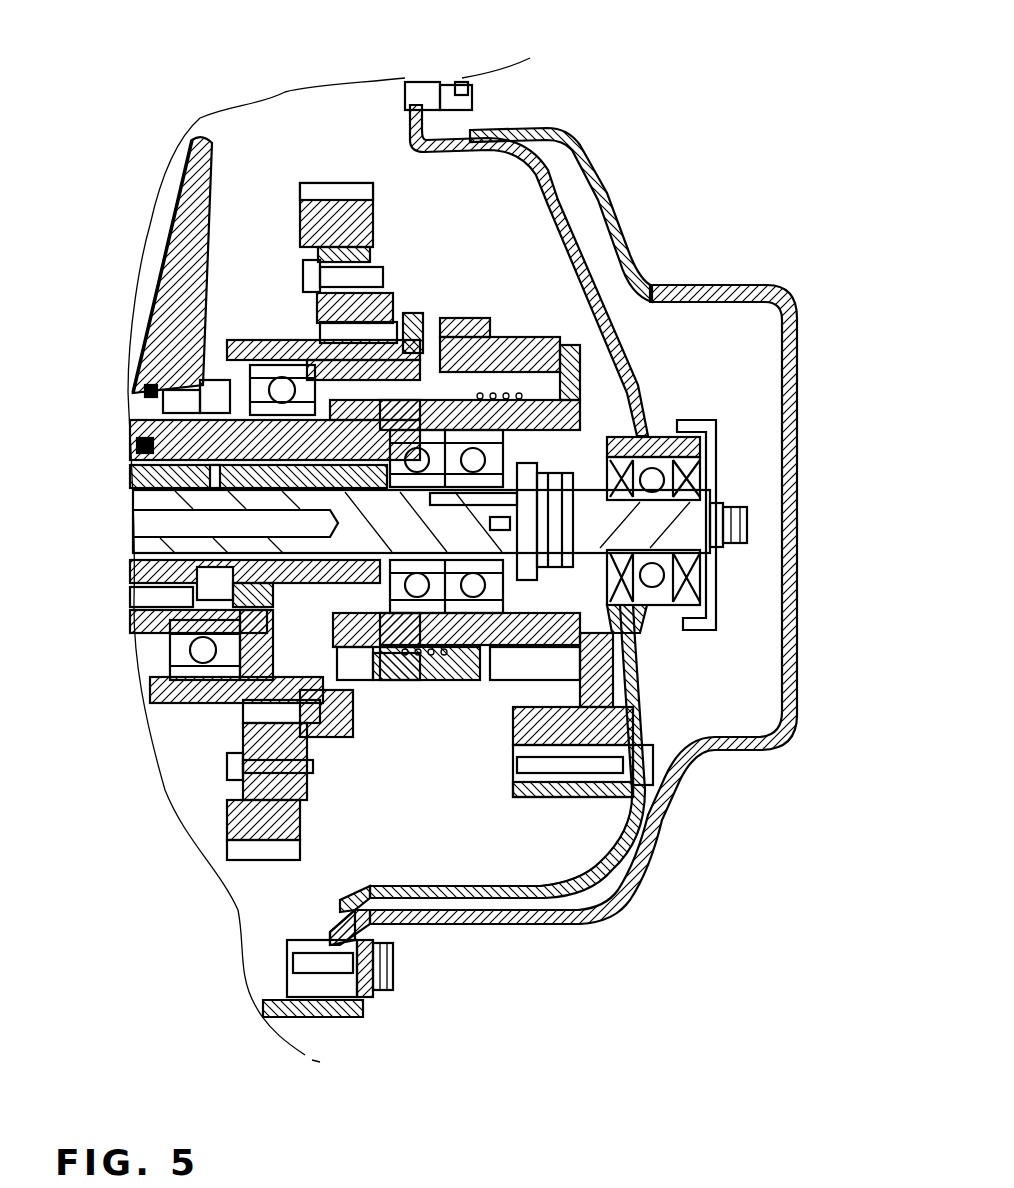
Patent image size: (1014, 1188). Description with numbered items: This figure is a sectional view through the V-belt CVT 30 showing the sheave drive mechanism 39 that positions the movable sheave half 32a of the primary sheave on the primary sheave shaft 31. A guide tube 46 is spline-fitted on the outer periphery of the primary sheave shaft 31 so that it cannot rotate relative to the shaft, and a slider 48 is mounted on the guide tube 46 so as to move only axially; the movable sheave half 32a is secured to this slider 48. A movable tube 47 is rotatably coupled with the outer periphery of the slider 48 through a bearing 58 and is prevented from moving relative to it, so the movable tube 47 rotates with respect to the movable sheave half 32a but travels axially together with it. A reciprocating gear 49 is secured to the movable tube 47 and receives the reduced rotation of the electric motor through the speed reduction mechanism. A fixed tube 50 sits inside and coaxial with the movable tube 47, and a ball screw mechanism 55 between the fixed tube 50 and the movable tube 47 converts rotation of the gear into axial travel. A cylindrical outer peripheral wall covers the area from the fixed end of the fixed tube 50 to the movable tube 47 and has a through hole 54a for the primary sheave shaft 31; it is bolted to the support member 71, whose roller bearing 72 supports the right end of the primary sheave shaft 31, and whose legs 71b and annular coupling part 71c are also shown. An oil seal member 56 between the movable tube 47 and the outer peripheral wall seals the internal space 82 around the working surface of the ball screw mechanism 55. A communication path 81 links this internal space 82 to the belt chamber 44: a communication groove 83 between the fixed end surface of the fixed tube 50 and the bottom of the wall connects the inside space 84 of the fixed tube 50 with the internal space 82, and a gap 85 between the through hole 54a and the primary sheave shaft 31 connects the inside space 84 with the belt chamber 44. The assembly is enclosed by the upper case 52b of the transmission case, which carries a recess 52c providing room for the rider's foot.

The V-belt CVT 30 is at (668, 196).
The primary sheave shaft 31 is at (150, 495).
The movable sheave half 32a is at (206, 152).
The sheave drive mechanism 39 is at (401, 192).
The belt chamber 44 is at (457, 242).
The guide tube 46 is at (320, 585).
The movable tube 47 is at (490, 353).
The slider 48 is at (133, 477).
The reciprocating gear 49 is at (282, 815).
The fixed tube 50 is at (507, 635).
The upper case 52b is at (798, 649).
The recess 52c is at (667, 830).
The through hole 54a is at (590, 545).
The ball screw mechanism 55 is at (397, 683).
The oil seal member 56 is at (445, 700).
The bearing 58 is at (203, 660).
The support member 71 is at (624, 826).
The legs 71b is at (587, 850).
The annular coupling part 71c is at (347, 1010).
The roller bearing 72 is at (700, 595).
The communication path 81 is at (850, 300).
The internal space 82 is at (600, 393).
The communication groove 83 is at (602, 413).
The inside space 84 is at (717, 467).
The gap 85 is at (645, 433).